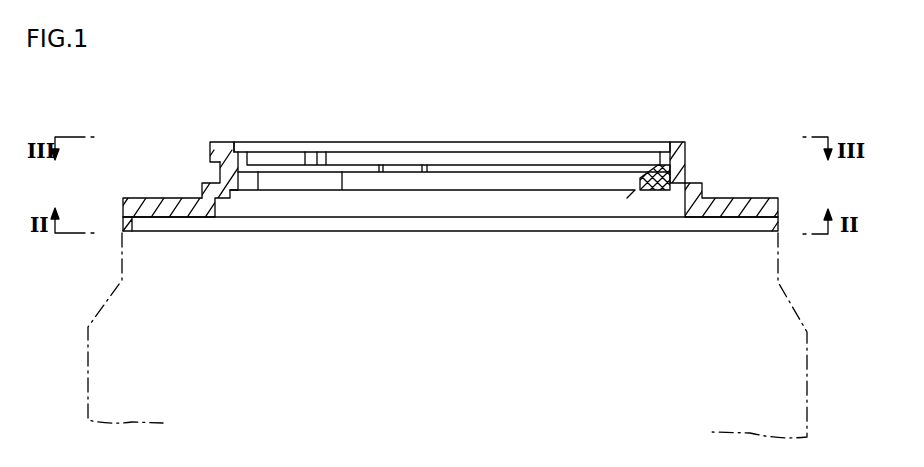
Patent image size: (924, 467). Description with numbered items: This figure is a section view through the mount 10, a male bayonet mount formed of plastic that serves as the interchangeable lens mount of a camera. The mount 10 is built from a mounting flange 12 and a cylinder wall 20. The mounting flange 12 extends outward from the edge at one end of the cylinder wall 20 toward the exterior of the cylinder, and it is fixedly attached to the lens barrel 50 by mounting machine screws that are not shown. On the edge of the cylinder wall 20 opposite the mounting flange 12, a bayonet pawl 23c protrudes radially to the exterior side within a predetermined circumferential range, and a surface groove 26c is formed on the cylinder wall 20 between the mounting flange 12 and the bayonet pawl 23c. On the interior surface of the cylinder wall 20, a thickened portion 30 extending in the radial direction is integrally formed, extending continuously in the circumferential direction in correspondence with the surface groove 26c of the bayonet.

The mount 10 is at (454, 140).
The mounting flange 12 is at (724, 198).
The cylinder wall 20 is at (678, 142).
The bayonet pawl 23c is at (223, 142).
The surface groove 26c is at (212, 170).
The thickened portion 30 is at (652, 191).
The lens barrel 50 is at (807, 364).